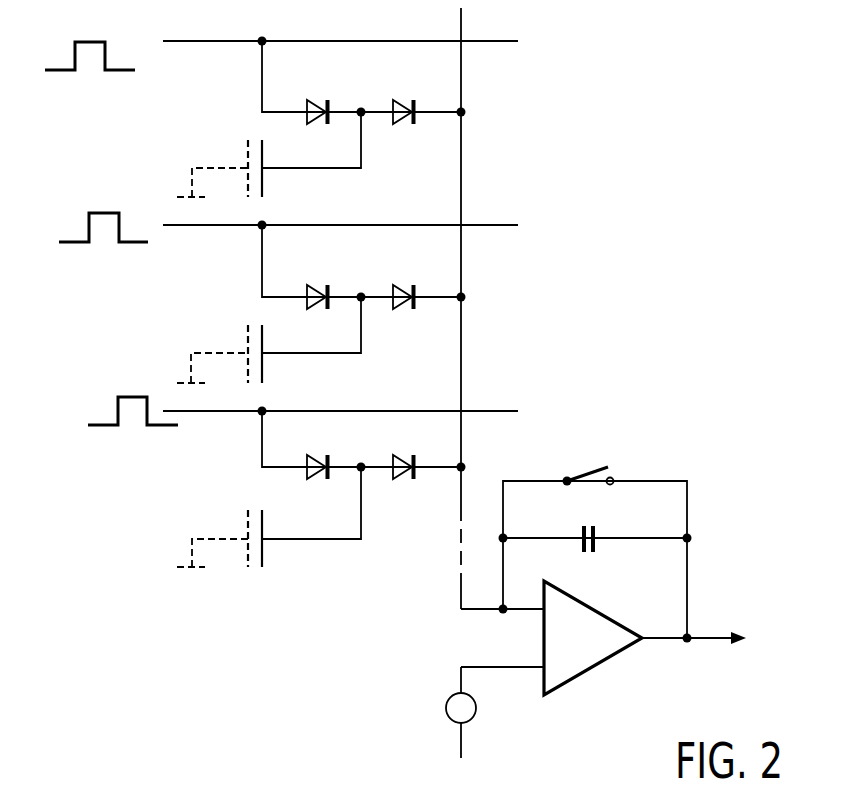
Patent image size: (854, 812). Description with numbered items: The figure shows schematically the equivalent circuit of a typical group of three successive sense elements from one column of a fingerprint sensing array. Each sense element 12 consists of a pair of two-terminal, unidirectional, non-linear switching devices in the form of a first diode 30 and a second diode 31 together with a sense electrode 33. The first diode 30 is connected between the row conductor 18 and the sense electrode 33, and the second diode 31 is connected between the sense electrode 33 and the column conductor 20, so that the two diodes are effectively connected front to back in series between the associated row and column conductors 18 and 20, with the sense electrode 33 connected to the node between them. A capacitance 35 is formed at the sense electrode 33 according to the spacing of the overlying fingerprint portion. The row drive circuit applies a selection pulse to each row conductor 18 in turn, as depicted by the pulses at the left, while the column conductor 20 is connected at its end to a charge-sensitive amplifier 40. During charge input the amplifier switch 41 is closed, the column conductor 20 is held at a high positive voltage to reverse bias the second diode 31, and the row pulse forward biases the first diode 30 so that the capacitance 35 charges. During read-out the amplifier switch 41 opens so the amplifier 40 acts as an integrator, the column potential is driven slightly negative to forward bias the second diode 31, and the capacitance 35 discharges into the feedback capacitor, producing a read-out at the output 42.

The sense element 12 is at (315, 302).
The row conductor 18 is at (502, 45).
The column conductor 20 is at (458, 23).
The first diode 30 is at (313, 100).
The second diode 31 is at (401, 124).
The sense electrode 33 is at (269, 158).
The capacitance 35 is at (247, 149).
The charge-sensitive amplifier 40 is at (599, 582).
The amplifier switch 41 is at (592, 464).
The output 42 is at (740, 649).